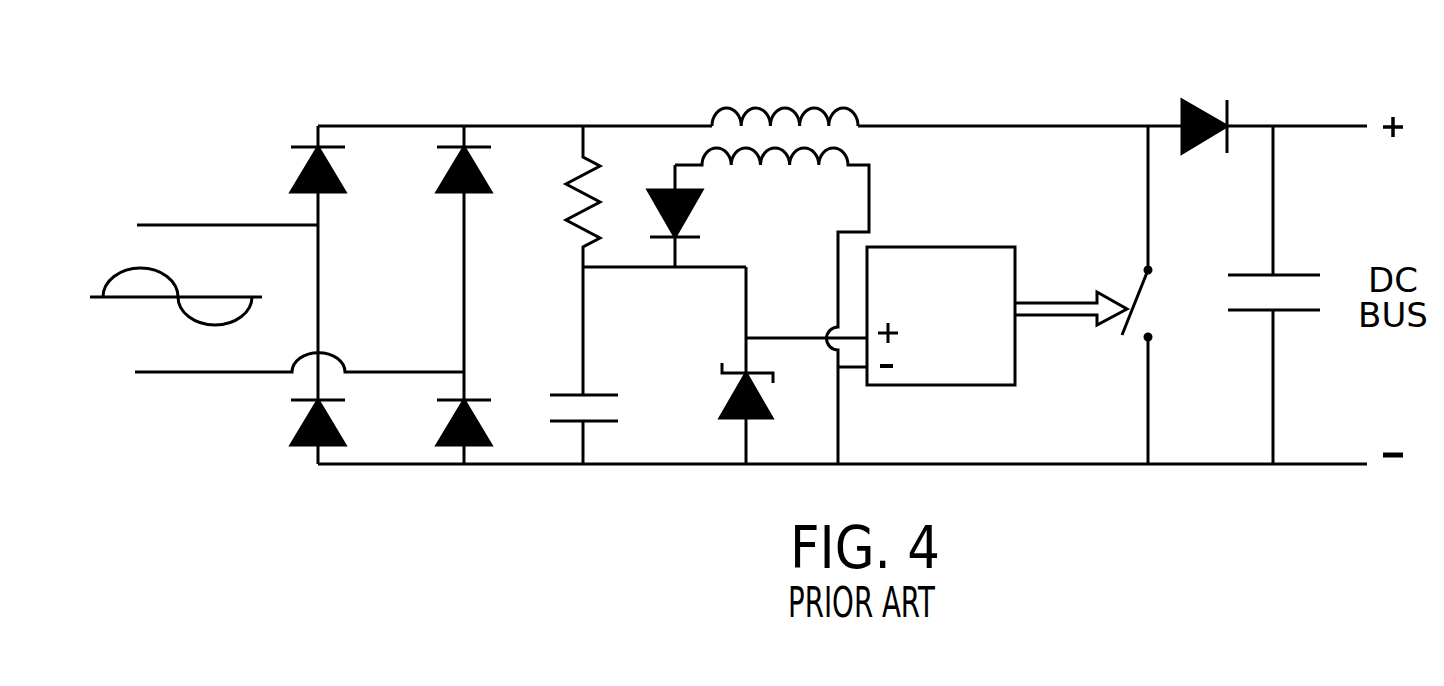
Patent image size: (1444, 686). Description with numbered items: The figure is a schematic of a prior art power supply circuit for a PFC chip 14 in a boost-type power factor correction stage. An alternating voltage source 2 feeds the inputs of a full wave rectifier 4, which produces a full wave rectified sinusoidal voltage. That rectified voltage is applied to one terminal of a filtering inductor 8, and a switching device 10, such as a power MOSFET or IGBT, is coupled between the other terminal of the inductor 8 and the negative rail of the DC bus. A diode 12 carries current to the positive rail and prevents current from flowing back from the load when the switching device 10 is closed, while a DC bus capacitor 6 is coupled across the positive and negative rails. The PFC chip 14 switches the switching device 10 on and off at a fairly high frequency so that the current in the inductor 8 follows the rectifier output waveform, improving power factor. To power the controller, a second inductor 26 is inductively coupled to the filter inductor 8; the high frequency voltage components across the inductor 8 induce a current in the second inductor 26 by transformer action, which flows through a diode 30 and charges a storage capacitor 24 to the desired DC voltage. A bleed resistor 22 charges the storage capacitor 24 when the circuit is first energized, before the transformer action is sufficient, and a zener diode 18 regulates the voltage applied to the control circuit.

The AC power source 2 is at (100, 250).
The full wave rectifier 4 is at (396, 505).
The DC bus capacitor 6 is at (1238, 300).
The filtering inductor 8 is at (845, 105).
The switching device 10 is at (1150, 305).
The diode 12 is at (1208, 97).
The PFC chip 14 is at (980, 246).
The zener diode 18 is at (728, 385).
The bleed resistor 22 is at (565, 228).
The storage capacitor 24 is at (598, 390).
The second inductor 26 is at (782, 172).
The diode 30 is at (695, 215).